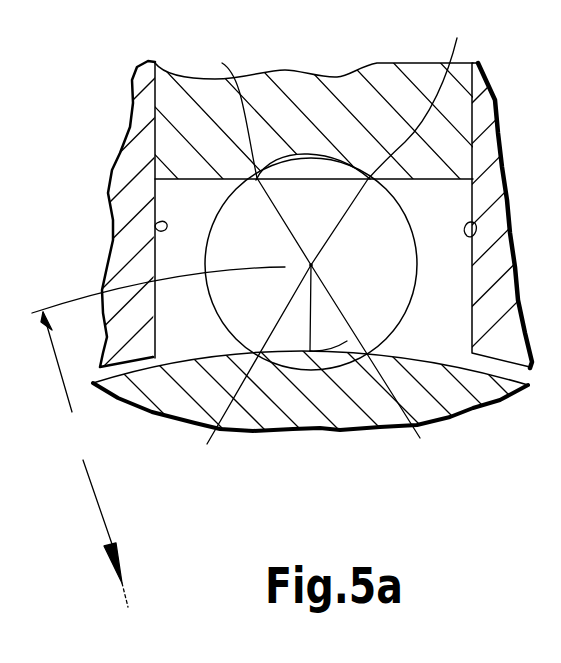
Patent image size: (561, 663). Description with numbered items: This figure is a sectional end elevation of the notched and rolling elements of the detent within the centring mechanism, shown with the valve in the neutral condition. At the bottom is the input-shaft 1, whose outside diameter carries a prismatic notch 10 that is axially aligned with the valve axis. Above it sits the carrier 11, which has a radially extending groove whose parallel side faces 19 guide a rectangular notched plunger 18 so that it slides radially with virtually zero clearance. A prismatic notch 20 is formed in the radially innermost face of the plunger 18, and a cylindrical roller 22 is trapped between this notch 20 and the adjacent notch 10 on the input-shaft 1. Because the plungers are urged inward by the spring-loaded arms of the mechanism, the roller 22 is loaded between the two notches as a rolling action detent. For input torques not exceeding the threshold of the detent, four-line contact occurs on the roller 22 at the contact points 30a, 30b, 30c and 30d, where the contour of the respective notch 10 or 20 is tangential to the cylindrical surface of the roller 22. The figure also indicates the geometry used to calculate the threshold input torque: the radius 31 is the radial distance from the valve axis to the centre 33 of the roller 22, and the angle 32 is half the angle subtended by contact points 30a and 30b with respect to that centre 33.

The input-shaft 1 is at (258, 398).
The prismatic notch 10 is at (338, 372).
The carrier 11 is at (143, 113).
The notched plunger 18 is at (382, 85).
The side face 19 is at (157, 223).
The prismatic notch 20 is at (297, 156).
The cylindrical roller 22 is at (402, 212).
The contact point 30a is at (234, 370).
The contact point 30b is at (385, 370).
The contact point 30c is at (246, 151).
The contact point 30d is at (408, 147).
The radius 31 is at (158, 437).
The angle 32 is at (348, 343).
The centre 33 is at (311, 265).